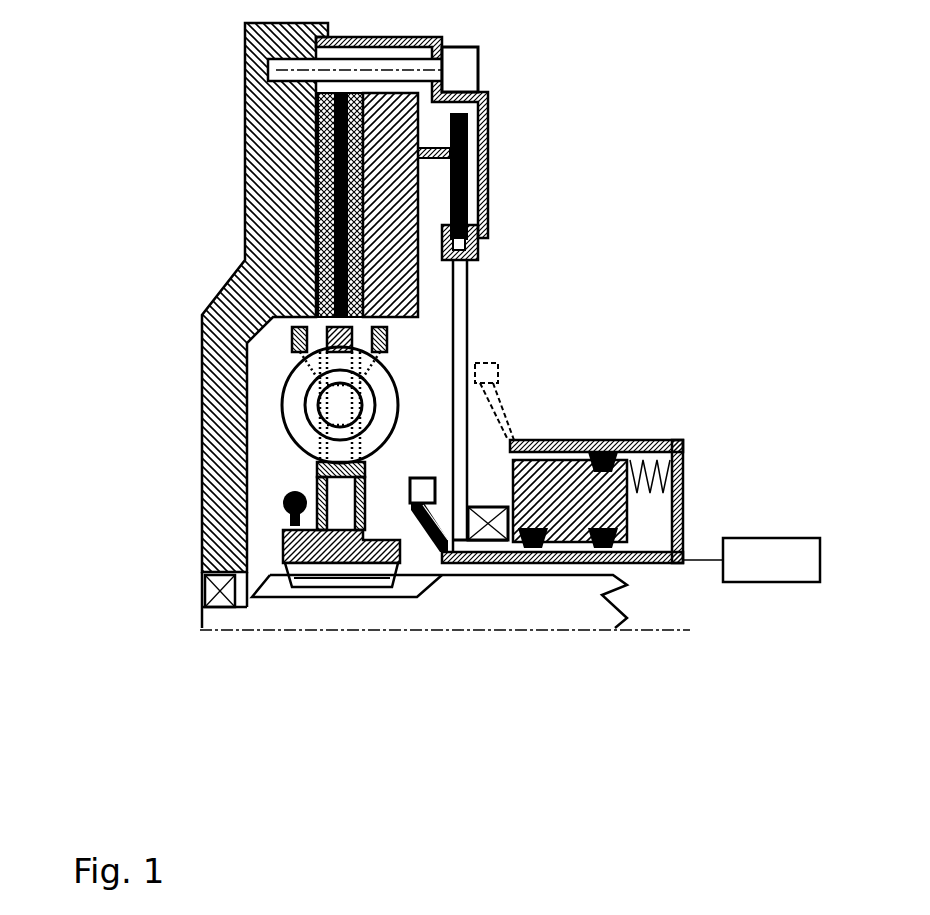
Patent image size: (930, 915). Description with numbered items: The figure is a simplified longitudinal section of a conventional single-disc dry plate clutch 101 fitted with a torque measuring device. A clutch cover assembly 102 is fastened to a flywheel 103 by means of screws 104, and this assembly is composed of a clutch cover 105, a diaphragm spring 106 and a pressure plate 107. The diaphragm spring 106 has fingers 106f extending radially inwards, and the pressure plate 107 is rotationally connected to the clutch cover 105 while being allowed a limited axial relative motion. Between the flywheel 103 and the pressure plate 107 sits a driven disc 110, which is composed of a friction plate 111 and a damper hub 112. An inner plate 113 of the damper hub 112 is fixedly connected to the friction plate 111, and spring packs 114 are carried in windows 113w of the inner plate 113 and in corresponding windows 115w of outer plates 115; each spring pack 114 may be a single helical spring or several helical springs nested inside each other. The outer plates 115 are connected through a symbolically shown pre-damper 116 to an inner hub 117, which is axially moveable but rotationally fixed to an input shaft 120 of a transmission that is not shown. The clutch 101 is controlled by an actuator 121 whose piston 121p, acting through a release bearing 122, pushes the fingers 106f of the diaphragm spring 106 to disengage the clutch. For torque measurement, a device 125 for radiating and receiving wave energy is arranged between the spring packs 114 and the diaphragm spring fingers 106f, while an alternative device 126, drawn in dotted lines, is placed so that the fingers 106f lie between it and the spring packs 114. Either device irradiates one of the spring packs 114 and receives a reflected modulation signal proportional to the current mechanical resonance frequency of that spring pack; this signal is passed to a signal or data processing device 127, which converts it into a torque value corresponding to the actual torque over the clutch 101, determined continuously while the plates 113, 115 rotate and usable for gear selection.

The single-disc dry plate clutch 101 is at (208, 33).
The clutch cover assembly 102 is at (658, 113).
The flywheel 103 is at (245, 127).
The screws 104 is at (480, 53).
The clutch cover 105 is at (490, 127).
The diaphragm spring 106 is at (470, 204).
The fingers 106f is at (470, 282).
The pressure plate 107 is at (421, 295).
The driven disc 110 is at (167, 207).
The friction plate 111 is at (318, 245).
The damper hub 112 is at (110, 643).
The inner plate 113 is at (322, 328).
The windows 113w is at (337, 402).
The spring packs 114 is at (280, 405).
The outer plates 115 is at (313, 472).
The windows 115w is at (318, 443).
The pre-damper 116 is at (280, 512).
The inner hub 117 is at (300, 542).
The input shaft 120 is at (568, 608).
The actuator 121 is at (684, 438).
The piston 121p is at (628, 515).
The release bearing 122 is at (490, 542).
The device for radiating and receiving wave energy 125 is at (423, 508).
The device for radiating and receiving wave energy 126 is at (502, 375).
The data processing device 127 is at (750, 573).